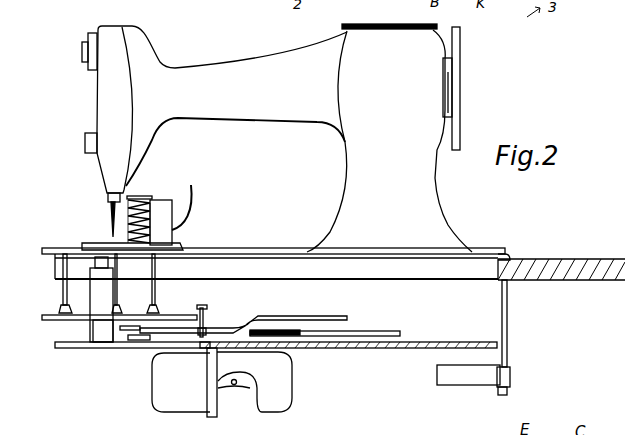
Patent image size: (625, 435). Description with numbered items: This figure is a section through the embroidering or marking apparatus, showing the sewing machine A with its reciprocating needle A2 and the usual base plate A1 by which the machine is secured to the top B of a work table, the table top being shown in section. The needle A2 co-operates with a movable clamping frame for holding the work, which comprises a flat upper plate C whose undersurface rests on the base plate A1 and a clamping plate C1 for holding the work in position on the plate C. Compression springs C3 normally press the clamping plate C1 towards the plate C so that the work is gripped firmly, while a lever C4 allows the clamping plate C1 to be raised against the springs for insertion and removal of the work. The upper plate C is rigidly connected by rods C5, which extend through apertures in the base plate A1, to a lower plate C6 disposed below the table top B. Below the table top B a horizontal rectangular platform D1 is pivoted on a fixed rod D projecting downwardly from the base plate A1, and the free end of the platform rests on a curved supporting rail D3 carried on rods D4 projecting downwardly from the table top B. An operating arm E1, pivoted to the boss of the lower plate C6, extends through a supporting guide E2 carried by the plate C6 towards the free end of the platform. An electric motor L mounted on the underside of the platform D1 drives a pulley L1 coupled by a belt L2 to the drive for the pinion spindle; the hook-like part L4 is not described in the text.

The sewing machine A is at (357, 177).
The base plate A1 is at (475, 253).
The reciprocating needle A2 is at (111, 222).
The top of work table B is at (547, 270).
The flat upper plate C is at (56, 248).
The clamping plate C1 is at (182, 244).
The compression springs C3 is at (139, 210).
The lever C4 is at (194, 198).
The rods C5 is at (168, 296).
The lower plate C6 is at (66, 321).
The fixed rod D is at (88, 328).
The horizontal rectangular platform D1 is at (94, 334).
The supporting rail D3 is at (437, 376).
The rods D4 is at (508, 297).
The operating arm E1 is at (321, 316).
The supporting guide E2 is at (206, 324).
The electric motor L is at (165, 383).
The pulley L1 is at (300, 348).
The belt L2 is at (393, 331).
The hook L4 is at (235, 390).